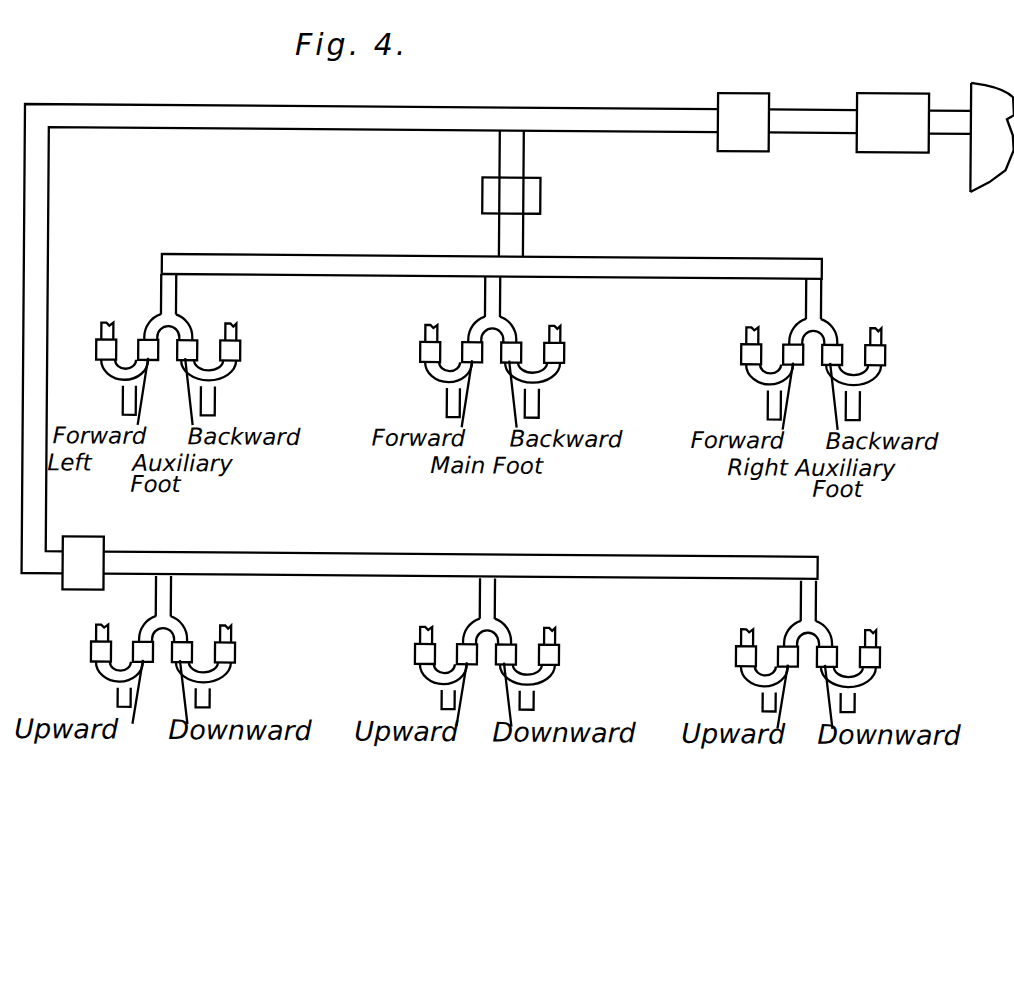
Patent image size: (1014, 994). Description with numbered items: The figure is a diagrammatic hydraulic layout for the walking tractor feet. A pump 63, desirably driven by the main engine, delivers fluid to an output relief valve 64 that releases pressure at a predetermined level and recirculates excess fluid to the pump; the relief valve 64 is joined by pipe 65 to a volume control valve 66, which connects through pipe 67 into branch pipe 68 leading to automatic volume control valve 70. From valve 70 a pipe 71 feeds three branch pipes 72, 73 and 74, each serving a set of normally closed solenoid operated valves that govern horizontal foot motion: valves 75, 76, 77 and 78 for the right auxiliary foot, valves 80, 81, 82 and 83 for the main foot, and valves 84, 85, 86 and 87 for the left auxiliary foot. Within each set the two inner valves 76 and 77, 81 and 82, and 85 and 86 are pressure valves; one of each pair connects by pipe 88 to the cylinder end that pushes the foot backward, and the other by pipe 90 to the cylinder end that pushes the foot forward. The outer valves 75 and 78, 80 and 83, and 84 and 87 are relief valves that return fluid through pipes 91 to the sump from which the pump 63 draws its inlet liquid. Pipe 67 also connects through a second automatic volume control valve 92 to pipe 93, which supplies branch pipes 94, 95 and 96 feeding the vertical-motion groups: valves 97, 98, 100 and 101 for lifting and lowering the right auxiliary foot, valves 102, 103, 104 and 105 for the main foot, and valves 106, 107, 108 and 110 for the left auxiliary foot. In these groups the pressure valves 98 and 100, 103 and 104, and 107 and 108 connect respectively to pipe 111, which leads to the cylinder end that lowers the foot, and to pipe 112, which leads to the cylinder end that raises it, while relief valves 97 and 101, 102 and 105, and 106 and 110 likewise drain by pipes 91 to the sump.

The pump 63 is at (983, 146).
The output relief valve 64 is at (893, 123).
The pipe 65 is at (825, 122).
The volume control valve 66 is at (743, 122).
The pipe 67 is at (660, 127).
The branch pipe 68 is at (500, 152).
The automatic volume control valve 70 is at (511, 195).
The pipe 71 is at (717, 245).
The branch pipe 72 is at (788, 297).
The branch pipe 73 is at (474, 295).
The branch pipe 74 is at (162, 285).
The solenoid operated relief valve 75 is at (894, 354).
The solenoid operated pressure valve 76 is at (822, 375).
The solenoid operated pressure valve 77 is at (782, 333).
The solenoid operated relief valve 78 is at (730, 355).
The solenoid operated relief valve 80 is at (573, 352).
The solenoid operated pressure valve 81 is at (501, 372).
The solenoid operated pressure valve 82 is at (461, 331).
The solenoid operated relief valve 83 is at (409, 353).
The solenoid operated relief valve 84 is at (242, 349).
The solenoid operated pressure valve 85 is at (188, 360).
The solenoid operated pressure valve 86 is at (144, 339).
The solenoid operated relief valve 87 is at (98, 349).
The pipe 88 is at (217, 411).
The pipe 90 is at (125, 411).
The pipes to sump 91 is at (109, 326).
The automatic volume control valve 92 is at (82, 562).
The pipe 93 is at (455, 549).
The branch pipe 94 is at (788, 600).
The branch pipe 95 is at (467, 598).
The branch pipe 96 is at (184, 596).
The solenoid operated relief valve 97 is at (892, 657).
The solenoid operated pressure valve 98 is at (816, 679).
The solenoid operated pressure valve 100 is at (781, 637).
The solenoid operated relief valve 101 is at (720, 658).
The solenoid operated relief valve 102 is at (577, 658).
The solenoid operated pressure valve 103 is at (526, 633).
The solenoid operated pressure valve 104 is at (460, 633).
The solenoid operated relief valve 105 is at (399, 655).
The solenoid operated relief valve 106 is at (253, 659).
The solenoid operated pressure valve 107 is at (169, 674).
The solenoid operated pressure valve 108 is at (136, 624).
The solenoid operated relief valve 110 is at (75, 653).
The pipe 111 is at (549, 687).
The pipe 112 is at (432, 691).